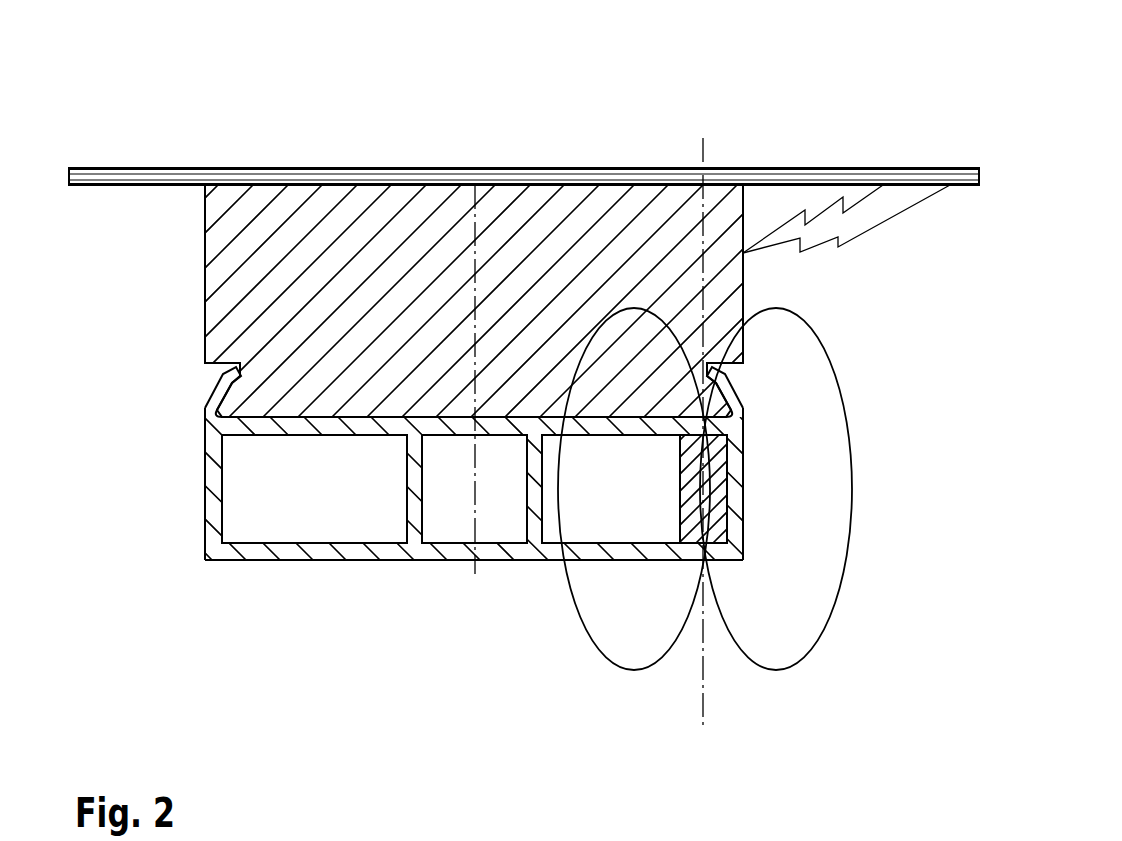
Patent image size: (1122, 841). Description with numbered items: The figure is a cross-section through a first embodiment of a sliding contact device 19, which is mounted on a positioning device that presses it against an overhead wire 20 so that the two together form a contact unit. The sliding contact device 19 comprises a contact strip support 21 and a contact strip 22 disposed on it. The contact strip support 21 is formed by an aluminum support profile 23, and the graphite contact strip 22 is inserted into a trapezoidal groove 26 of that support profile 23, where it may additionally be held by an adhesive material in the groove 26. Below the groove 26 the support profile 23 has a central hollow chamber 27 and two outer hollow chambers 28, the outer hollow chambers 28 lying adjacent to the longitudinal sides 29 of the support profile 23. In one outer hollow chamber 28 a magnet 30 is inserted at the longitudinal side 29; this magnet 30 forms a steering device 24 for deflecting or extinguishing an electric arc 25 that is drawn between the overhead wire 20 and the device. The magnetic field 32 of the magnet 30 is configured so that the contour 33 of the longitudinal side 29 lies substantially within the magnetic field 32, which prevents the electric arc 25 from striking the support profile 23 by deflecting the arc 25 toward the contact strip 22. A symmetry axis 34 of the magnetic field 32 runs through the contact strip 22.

The sliding contact device 19 is at (188, 364).
The overhead wire 20 is at (106, 177).
The contact strip support 21 is at (508, 409).
The contact strip 22 is at (237, 290).
The support profile 23 is at (212, 537).
The steering device 24 is at (746, 489).
The electric arc 25 is at (878, 207).
The trapezoidal groove 26 is at (283, 385).
The central hollow chamber 27 is at (447, 522).
The outer hollow chamber 28 is at (267, 513).
The longitudinal side 29 is at (197, 496).
The magnet 30 is at (717, 489).
The magnetic field 32 is at (808, 593).
The contour 33 is at (738, 389).
The symmetry axis 34 is at (703, 710).